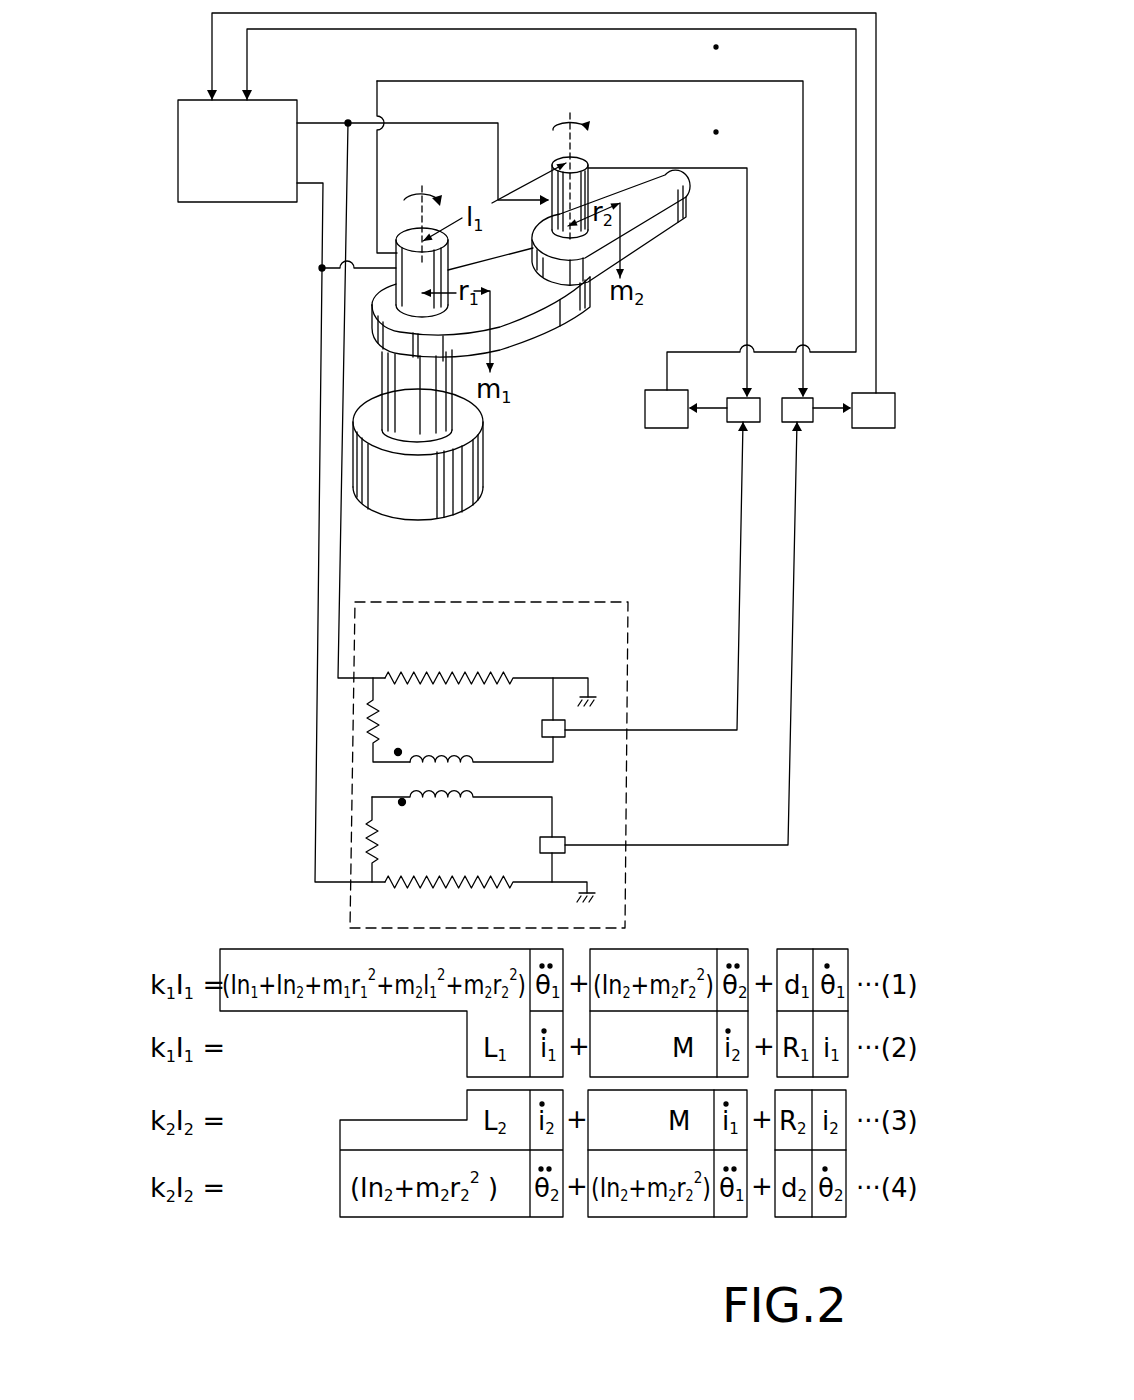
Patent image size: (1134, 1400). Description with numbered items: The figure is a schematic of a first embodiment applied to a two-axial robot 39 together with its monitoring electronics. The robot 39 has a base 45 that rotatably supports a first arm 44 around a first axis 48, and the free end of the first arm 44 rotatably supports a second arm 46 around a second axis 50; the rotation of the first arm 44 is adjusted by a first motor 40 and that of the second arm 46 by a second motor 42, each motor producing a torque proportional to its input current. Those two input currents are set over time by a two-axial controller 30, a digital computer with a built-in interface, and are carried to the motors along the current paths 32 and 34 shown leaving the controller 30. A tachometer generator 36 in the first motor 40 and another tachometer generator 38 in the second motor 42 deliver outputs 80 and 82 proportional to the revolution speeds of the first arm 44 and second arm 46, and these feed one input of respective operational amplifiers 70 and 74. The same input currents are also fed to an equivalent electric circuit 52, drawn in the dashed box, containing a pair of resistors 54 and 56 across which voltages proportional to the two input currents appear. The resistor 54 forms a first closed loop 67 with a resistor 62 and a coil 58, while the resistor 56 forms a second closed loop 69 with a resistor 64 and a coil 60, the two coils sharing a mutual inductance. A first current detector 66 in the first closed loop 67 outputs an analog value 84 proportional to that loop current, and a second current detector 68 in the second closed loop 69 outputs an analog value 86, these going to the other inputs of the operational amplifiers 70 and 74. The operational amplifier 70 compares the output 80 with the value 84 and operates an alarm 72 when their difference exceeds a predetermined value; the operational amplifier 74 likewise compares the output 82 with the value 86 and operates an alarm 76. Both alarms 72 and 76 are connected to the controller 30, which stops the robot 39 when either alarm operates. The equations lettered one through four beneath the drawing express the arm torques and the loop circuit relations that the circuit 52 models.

The two-axial controller 30 is at (260, 100).
The first current command line I1 32 is at (307, 158).
The second current command line I2 34 is at (320, 87).
The tachometer generator 36 is at (400, 232).
The tachometer generator 38 is at (555, 166).
The two-axial robot 39 is at (547, 405).
The first motor 40 is at (448, 271).
The second motor 42 is at (592, 195).
The first arm 44 is at (545, 327).
The base 45 is at (467, 468).
The second arm 46 is at (672, 228).
The first axis 48 is at (436, 176).
The second axis 50 is at (589, 119).
The equivalent electric circuit 52 is at (375, 600).
The resistor 54 is at (485, 888).
The resistor 56 is at (492, 678).
The coil 58 is at (465, 805).
The coil 60 is at (462, 750).
The resistor 62 is at (364, 840).
The resistor 64 is at (366, 720).
The first current detector 66 is at (563, 853).
The first closed loop 67 is at (556, 816).
The second current detector 68 is at (563, 737).
The second closed loop 69 is at (517, 672).
The operational amplifier 70 is at (805, 422).
The alarm 72 is at (876, 428).
The operational amplifier 74 is at (730, 422).
The alarm 76 is at (667, 428).
The output 80 is at (742, 70).
The output 82 is at (775, 118).
The analog value 84 is at (670, 815).
The analog value 86 is at (670, 702).